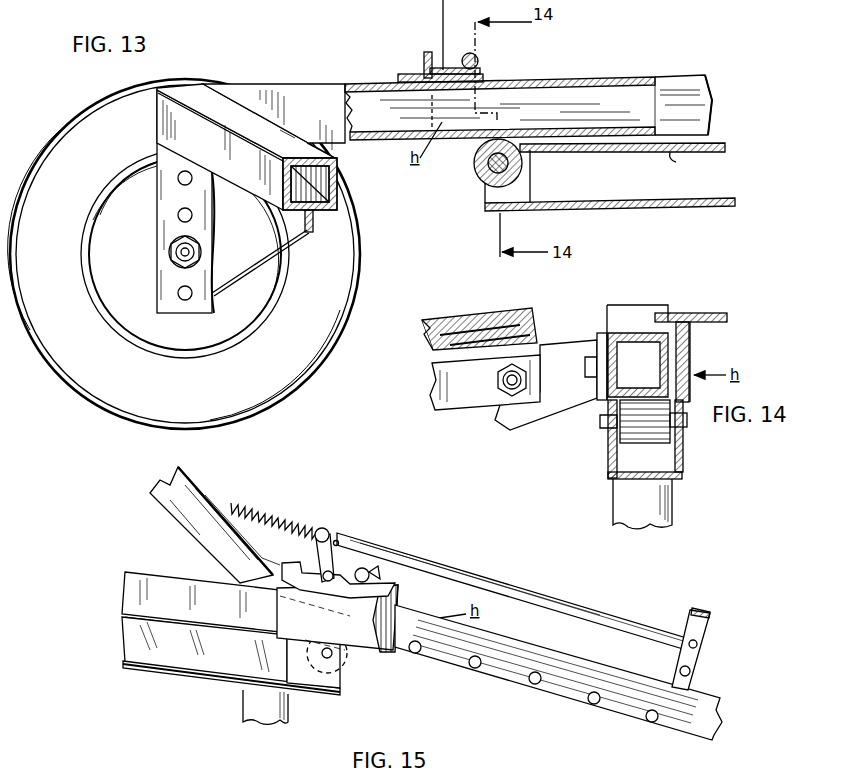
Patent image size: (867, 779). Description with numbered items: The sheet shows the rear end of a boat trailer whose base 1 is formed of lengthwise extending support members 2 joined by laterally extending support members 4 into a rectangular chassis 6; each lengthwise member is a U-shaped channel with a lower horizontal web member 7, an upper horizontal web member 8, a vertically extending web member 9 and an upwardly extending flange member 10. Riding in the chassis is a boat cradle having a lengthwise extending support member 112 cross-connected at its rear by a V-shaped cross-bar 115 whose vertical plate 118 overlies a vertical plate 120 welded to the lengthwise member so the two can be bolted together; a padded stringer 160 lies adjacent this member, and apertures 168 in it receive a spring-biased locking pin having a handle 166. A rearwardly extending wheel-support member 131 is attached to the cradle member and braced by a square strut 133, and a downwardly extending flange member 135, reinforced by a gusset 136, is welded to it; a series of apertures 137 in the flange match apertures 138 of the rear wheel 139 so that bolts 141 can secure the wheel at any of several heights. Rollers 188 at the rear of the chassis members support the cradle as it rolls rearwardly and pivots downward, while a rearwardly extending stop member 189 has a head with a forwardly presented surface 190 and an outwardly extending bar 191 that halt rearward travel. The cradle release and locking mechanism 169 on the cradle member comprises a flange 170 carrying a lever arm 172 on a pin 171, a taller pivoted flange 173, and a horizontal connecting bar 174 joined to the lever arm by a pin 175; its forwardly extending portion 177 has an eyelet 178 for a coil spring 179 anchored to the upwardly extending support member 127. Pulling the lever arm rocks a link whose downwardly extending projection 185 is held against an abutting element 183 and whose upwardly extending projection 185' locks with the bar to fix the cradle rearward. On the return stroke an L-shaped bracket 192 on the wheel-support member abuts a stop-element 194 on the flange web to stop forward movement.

In FIG. 13, the base 1 is at (716, 98).
In FIG. 13, the lengthwise extending support member 2 is at (703, 76).
In FIG. 14, the lengthwise extending support member 2 is at (606, 452).
In FIG. 15, the lengthwise extending support member 2 is at (123, 652).
In FIG. 15, the laterally extending support member 4 is at (290, 719).
In FIG. 13, the rectangular chassis 6 is at (727, 149).
In FIG. 13, the lower horizontal web member 7 is at (676, 156).
In FIG. 13, the upper horizontal web member 8 is at (700, 199).
In FIG. 14, the upper horizontal web member 8 is at (627, 480).
In FIG. 15, the upper horizontal web member 8 is at (186, 672).
In FIG. 15, the vertically extending web member 9 is at (133, 632).
In FIG. 13, the upwardly extending flange member 10 is at (716, 125).
In FIG. 15, the upwardly extending flange member 10 is at (140, 588).
In FIG. 13, the lengthwise extending support member 112 is at (598, 78).
In FIG. 14, the lengthwise extending support member 112 is at (598, 340).
In FIG. 15, the lengthwise extending support member 112 is at (722, 722).
In FIG. 14, the cross-bar 115 is at (510, 432).
In FIG. 14, the vertical plate 118 is at (596, 392).
In FIG. 14, the vertical plate 120 is at (600, 400).
In FIG. 15, the upwardly extending support member 127 is at (160, 496).
In FIG. 13, the wheel-support member 131 is at (318, 96).
In FIG. 13, the strut 133 is at (337, 200).
In FIG. 13, the flange member 135 is at (210, 305).
In FIG. 14, the flange member 135 is at (668, 518).
In FIG. 13, the gusset 136 is at (300, 232).
In FIG. 13, the aperture 137 is at (178, 176).
In FIG. 13, the aperture 138 is at (173, 262).
In FIG. 13, the rear wheel 139 is at (348, 292).
In FIG. 13, the bolt 141 is at (176, 250).
In FIG. 14, the boat-supporting member or stringer 160 is at (460, 318).
In FIG. 13, the handle 166 is at (232, 0).
In FIG. 15, the aperture 168 is at (474, 668).
In FIG. 15, the cradle release and locking mechanism 169 is at (365, 527).
In FIG. 15, the upwardly extending flange 170 is at (690, 682).
In FIG. 15, the pin 171 is at (700, 663).
In FIG. 15, the lever arm 172 is at (708, 610).
In FIG. 15, the upwardly extending flange 173 is at (360, 560).
In FIG. 15, the horizontal connecting bar 174 is at (455, 577).
In FIG. 15, the pin 175 is at (697, 645).
In FIG. 15, the forwardly extending portion 177 is at (334, 540).
In FIG. 15, the eyelet 178 is at (323, 528).
In FIG. 15, the coil spring 179 is at (262, 508).
In FIG. 15, the abutting element 183 is at (322, 566).
In FIG. 15, the downwardly extending projection 185 is at (242, 549).
In FIG. 15, the upwardly extending projection 185' is at (417, 546).
In FIG. 13, the roller 188 is at (520, 168).
In FIG. 14, the roller 188 is at (650, 445).
In FIG. 15, the roller 188 is at (348, 657).
In FIG. 13, the stop member 189 is at (483, 78).
In FIG. 13, the forwardly presented surface 190 is at (482, 72).
In FIG. 15, the forwardly presented surface 190 is at (400, 610).
In FIG. 13, the outwardly extending bar 191 is at (468, 54).
In FIG. 14, the outwardly extending bar 191 is at (718, 313).
In FIG. 15, the outwardly extending bar 191 is at (382, 558).
In FIG. 13, the L-shaped bracket 192 is at (424, 60).
In FIG. 14, the L-shaped bracket 192 is at (648, 305).
In FIG. 14, the stop-element 194 is at (692, 352).
In FIG. 15, the stop-element 194 is at (395, 652).